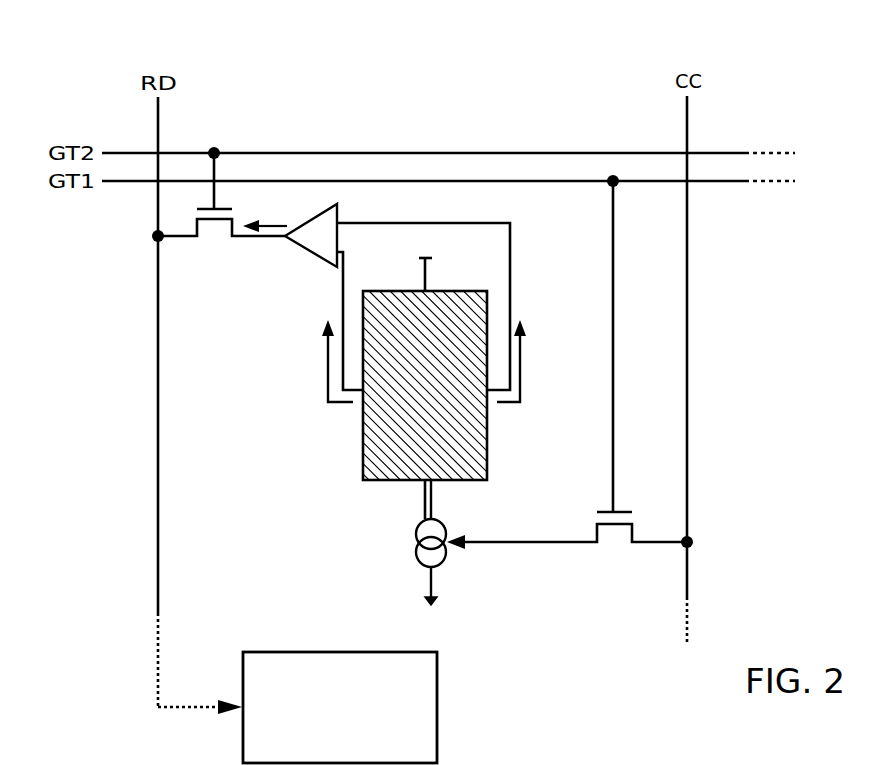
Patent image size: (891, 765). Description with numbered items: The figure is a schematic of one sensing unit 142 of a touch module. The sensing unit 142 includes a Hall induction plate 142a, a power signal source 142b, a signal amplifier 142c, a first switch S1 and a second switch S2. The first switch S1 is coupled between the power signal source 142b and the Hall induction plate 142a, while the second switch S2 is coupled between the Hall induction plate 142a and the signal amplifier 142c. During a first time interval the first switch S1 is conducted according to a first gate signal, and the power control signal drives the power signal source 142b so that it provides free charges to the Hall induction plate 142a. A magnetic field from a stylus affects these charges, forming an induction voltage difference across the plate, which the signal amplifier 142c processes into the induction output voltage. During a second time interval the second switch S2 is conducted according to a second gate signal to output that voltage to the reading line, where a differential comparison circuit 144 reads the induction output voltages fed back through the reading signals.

The sensing unit 142 is at (326, 104).
The Hall induction plate 142a is at (432, 388).
The power signal source 142b is at (416, 548).
The signal amplifier 142c is at (302, 250).
The differential comparison circuit 144 is at (438, 705).
The first switch S1 is at (570, 372).
The second switch S2 is at (218, 204).